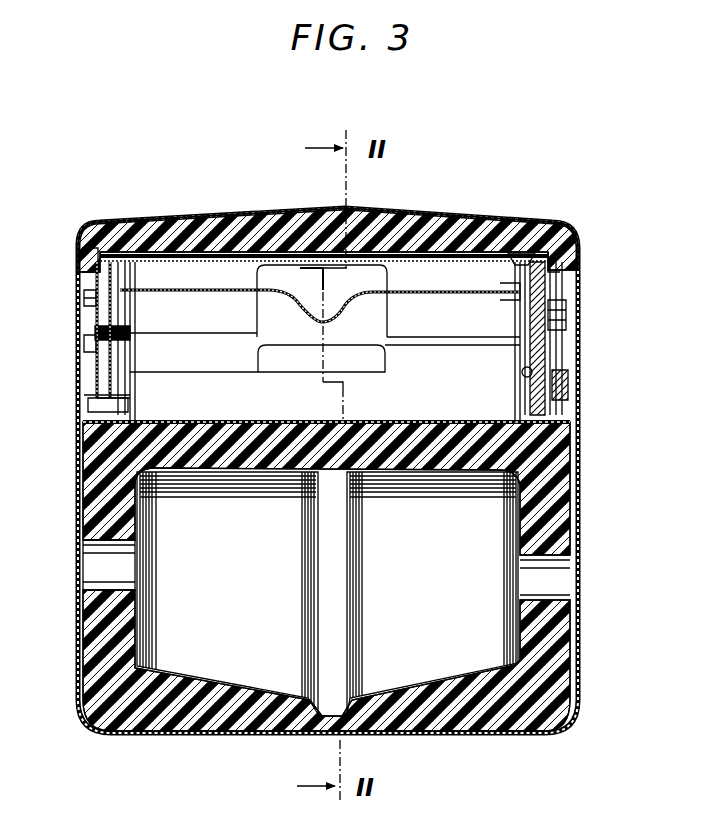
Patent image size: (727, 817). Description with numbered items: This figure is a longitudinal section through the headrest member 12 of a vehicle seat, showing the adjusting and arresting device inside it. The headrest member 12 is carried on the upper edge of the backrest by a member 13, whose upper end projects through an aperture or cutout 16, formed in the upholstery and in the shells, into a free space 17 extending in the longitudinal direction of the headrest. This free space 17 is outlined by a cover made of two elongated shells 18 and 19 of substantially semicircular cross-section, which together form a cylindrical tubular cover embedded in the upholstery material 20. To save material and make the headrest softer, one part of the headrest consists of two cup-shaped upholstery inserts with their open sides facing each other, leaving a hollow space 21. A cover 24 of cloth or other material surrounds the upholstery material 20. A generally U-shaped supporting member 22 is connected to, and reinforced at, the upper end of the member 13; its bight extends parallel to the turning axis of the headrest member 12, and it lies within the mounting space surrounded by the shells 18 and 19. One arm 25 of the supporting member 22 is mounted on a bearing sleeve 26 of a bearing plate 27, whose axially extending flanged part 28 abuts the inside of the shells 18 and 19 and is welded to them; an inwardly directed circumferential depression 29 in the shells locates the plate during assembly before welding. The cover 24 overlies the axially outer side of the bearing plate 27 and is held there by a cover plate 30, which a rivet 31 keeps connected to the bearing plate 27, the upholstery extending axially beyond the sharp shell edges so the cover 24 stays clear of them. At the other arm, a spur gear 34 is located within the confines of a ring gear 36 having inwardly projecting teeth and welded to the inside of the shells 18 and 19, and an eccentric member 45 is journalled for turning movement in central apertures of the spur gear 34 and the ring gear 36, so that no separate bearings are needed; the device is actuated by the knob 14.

The headrest member 12 is at (88, 718).
The member 13 is at (331, 318).
The knob 14 is at (572, 380).
The aperture or cutout 16 is at (270, 268).
The free space 17 is at (487, 233).
The shell 18 is at (411, 234).
The shell 19 is at (388, 421).
The upholstery material 20 is at (535, 232).
The hollow space 21 is at (270, 667).
The supporting member 22 is at (244, 296).
The cover 24 is at (78, 628).
The arm 25 is at (130, 362).
The bearing sleeve 26 is at (124, 323).
The bearing plate 27 is at (92, 395).
The flanged part 28 is at (92, 238).
The circumferential depression 29 is at (125, 234).
The cover plate 30 is at (96, 303).
The rivet 31 is at (95, 347).
The spur gear 34 is at (570, 313).
The ring gear 36 is at (508, 288).
The eccentric member 45 is at (521, 373).